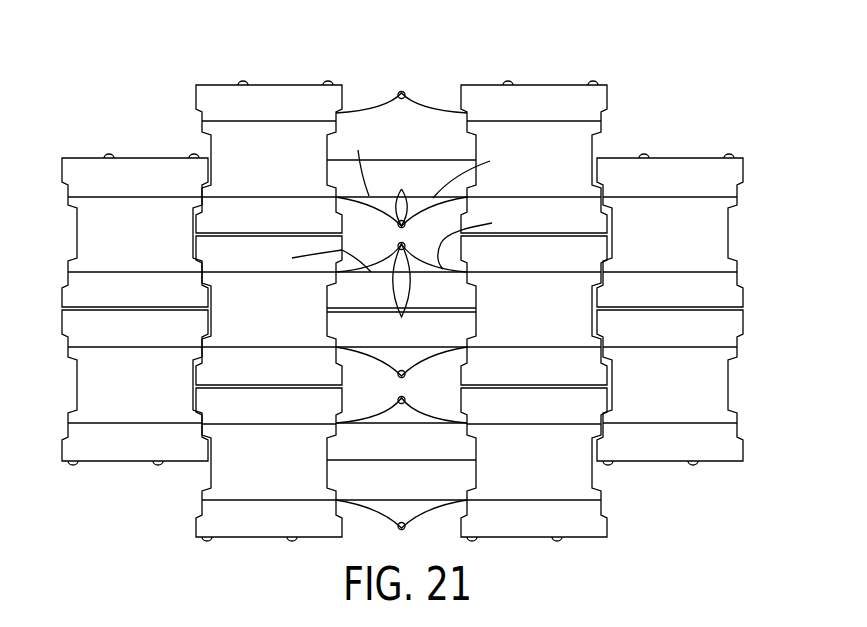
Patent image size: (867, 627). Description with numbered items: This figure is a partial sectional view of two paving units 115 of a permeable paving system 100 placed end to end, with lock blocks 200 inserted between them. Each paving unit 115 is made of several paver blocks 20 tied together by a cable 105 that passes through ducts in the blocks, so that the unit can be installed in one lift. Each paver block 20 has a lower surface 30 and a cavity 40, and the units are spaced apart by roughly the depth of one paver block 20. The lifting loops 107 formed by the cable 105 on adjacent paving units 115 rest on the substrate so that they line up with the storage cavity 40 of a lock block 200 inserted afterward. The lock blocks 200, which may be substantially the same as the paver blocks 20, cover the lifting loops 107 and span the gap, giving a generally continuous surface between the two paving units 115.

The permeable paving system 100 is at (128, 106).
The paving unit 115 is at (222, 72).
The paver block 20 is at (552, 70).
The lower surface 30 is at (598, 97).
The cavity 40 is at (587, 121).
The lock block 200 is at (389, 147).
The lifting loop 107 is at (403, 252).
The cable 105 is at (391, 198).